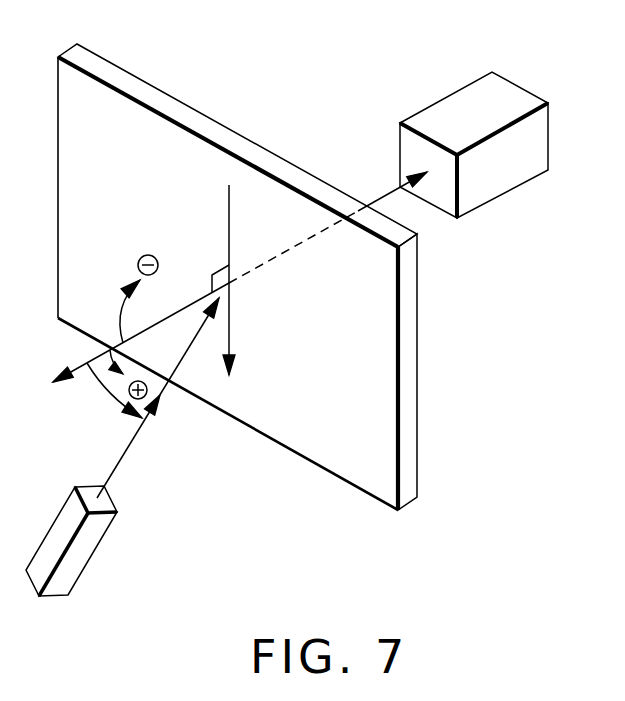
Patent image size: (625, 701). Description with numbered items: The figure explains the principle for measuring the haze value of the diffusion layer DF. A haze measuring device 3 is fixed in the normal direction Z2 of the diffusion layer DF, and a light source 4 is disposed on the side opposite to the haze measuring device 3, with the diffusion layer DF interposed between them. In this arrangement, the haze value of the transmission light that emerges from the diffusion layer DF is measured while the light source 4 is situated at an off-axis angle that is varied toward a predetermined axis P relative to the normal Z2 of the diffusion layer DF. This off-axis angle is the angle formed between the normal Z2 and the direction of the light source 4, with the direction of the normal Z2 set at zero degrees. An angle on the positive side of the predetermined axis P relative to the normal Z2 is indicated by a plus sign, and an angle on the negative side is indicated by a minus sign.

The diffusion layer DF is at (211, 121).
The haze measuring device 3 is at (508, 192).
The light source 4 is at (82, 573).
The predetermined axis P is at (229, 296).
The normal direction Z2 is at (224, 287).